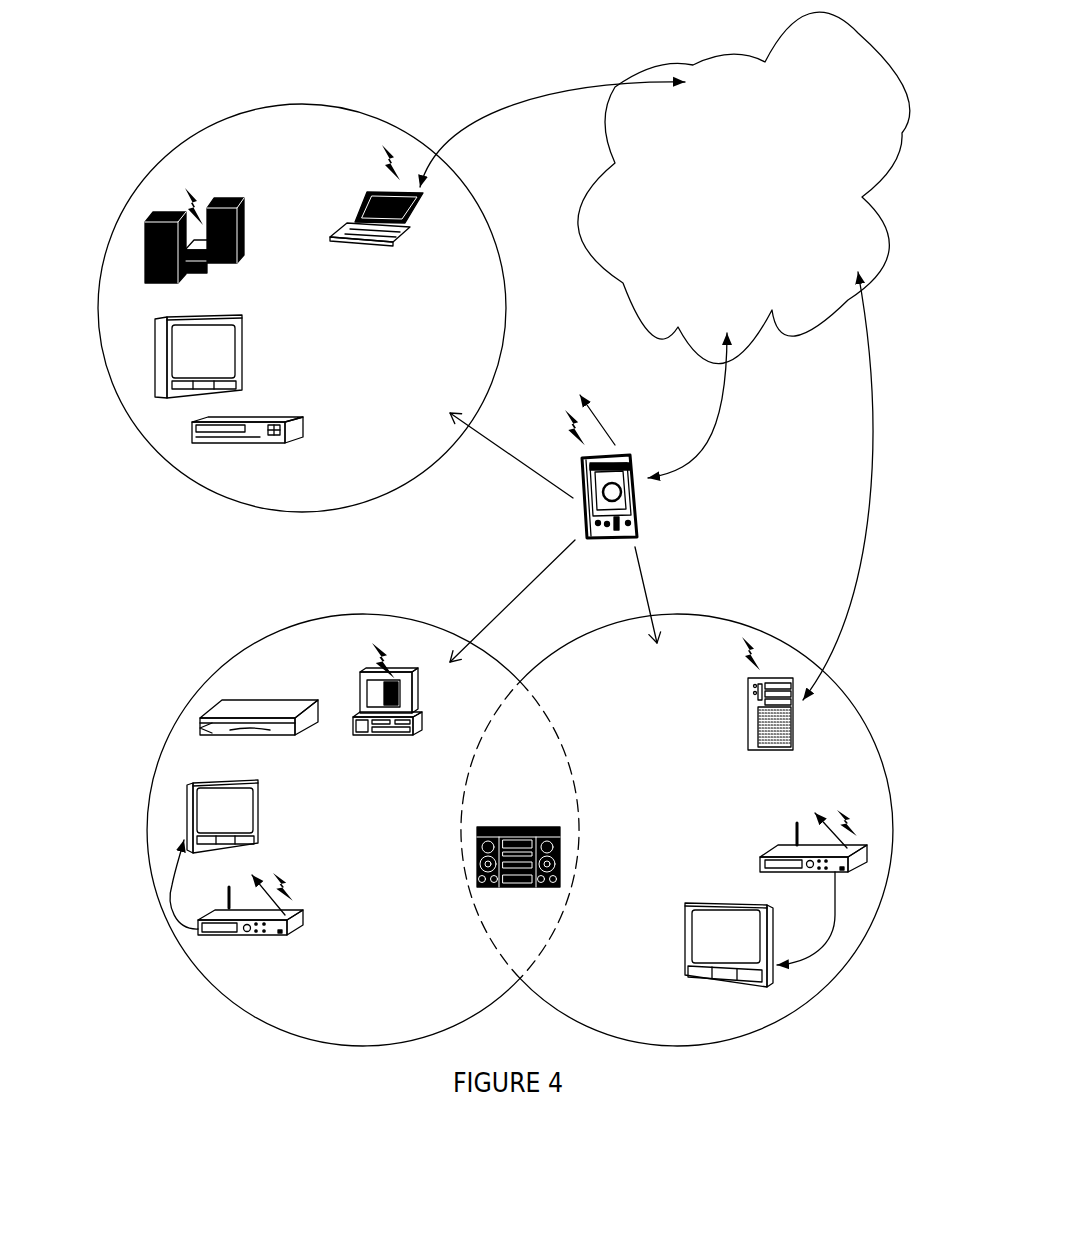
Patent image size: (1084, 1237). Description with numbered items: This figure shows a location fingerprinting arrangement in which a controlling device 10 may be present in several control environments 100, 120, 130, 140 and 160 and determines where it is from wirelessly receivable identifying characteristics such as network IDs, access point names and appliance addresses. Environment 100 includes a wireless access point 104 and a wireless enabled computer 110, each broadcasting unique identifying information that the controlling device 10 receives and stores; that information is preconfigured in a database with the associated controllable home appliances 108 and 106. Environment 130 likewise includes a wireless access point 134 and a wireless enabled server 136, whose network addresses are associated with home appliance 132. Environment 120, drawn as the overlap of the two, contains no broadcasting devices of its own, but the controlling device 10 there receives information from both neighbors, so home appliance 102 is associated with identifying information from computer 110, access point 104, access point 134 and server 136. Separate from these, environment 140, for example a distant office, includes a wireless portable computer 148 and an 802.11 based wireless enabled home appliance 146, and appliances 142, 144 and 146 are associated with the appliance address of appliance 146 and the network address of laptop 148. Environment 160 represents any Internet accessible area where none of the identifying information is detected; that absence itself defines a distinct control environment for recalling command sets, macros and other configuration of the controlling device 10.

The controlling device 10 is at (643, 512).
The control environment 100 is at (353, 1023).
The home appliance 102 is at (555, 833).
The wireless access point 104 is at (258, 935).
The controllable home appliance 106 is at (187, 781).
The controllable home appliance 108 is at (210, 718).
The wireless enabled computer 110 is at (400, 676).
The control environment 120 is at (522, 960).
The control environment 130 is at (707, 1020).
The home appliance 132 is at (760, 985).
The wireless access point 134 is at (860, 867).
The wireless enabled server 136 is at (772, 678).
The control environment 140 is at (307, 495).
The appliance 142 is at (208, 443).
The appliance 144 is at (155, 347).
The wireless enabled home appliance 146 is at (168, 205).
The wireless portable computer 148 is at (397, 192).
The control environment 160 is at (735, 68).